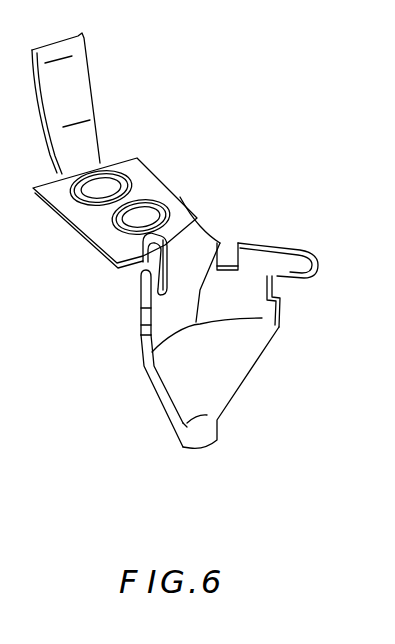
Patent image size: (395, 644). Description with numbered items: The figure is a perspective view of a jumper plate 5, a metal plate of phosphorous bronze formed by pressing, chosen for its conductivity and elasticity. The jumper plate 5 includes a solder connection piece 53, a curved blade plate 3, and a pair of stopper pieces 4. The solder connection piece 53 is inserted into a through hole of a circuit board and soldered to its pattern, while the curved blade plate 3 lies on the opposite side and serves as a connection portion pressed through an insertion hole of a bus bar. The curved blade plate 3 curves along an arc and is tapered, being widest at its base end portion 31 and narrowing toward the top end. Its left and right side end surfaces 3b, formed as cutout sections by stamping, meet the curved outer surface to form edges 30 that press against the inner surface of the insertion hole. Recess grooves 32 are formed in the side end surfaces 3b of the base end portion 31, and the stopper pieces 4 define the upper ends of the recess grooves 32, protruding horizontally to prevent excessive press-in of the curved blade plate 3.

The jumper plate 5 is at (252, 106).
The solder connection piece 53 is at (76, 103).
The stopper pieces 4 is at (140, 293).
The edges 30 is at (140, 357).
The base end portion 31 is at (240, 243).
The recess grooves 32 is at (288, 290).
The curved blade plate 3 is at (217, 350).
The side end surfaces 3b is at (173, 420).